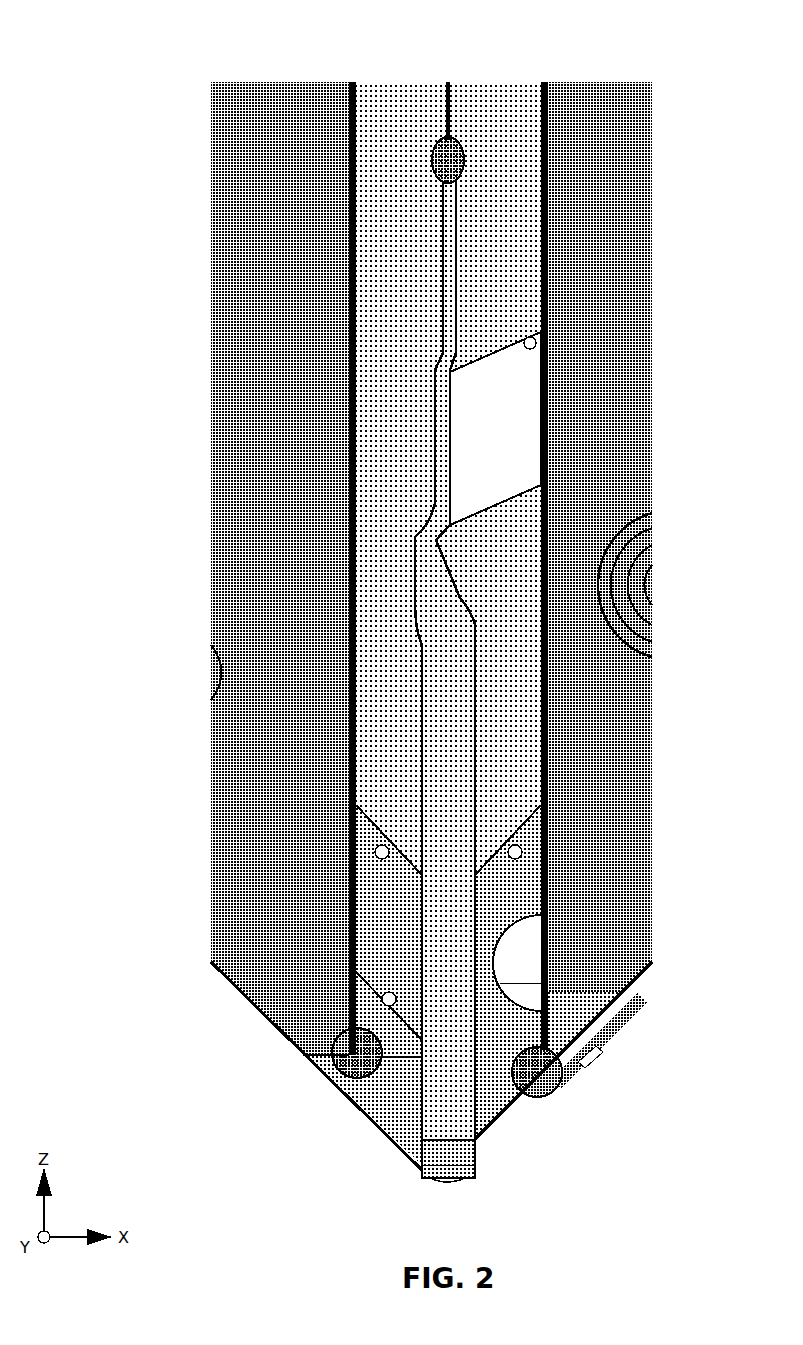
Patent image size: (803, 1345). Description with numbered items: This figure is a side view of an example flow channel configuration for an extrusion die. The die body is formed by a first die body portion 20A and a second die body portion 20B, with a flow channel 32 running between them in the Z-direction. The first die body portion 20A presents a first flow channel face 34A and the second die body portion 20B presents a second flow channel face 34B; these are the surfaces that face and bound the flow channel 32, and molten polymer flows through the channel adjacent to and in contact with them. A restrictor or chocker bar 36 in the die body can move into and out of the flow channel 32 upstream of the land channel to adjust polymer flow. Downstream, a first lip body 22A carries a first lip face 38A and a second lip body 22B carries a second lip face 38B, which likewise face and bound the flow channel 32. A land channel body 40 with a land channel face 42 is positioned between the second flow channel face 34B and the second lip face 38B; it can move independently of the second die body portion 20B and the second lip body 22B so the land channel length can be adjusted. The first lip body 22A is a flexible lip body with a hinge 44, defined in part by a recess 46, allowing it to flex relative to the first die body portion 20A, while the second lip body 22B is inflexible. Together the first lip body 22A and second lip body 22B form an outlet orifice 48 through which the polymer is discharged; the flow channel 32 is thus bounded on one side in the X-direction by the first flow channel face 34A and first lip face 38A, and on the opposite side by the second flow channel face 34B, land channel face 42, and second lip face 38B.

The flow channel 32 is at (452, 48).
The first die body portion 20A is at (515, 568).
The second die body portion 20B is at (370, 580).
The restrictor or chocker bar 36 is at (495, 428).
The first flow channel face 34A is at (477, 800).
The second flow channel face 34B is at (420, 765).
The land channel face 42 is at (422, 910).
The land channel body 40 is at (389, 930).
The hinge 44 is at (492, 957).
The recess 46 is at (530, 983).
The first lip body 22A is at (558, 972).
The second lip body 22B is at (362, 1110).
The first lip face 38A is at (480, 1083).
The second lip face 38B is at (327, 1080).
The outlet orifice 48 is at (471, 1184).